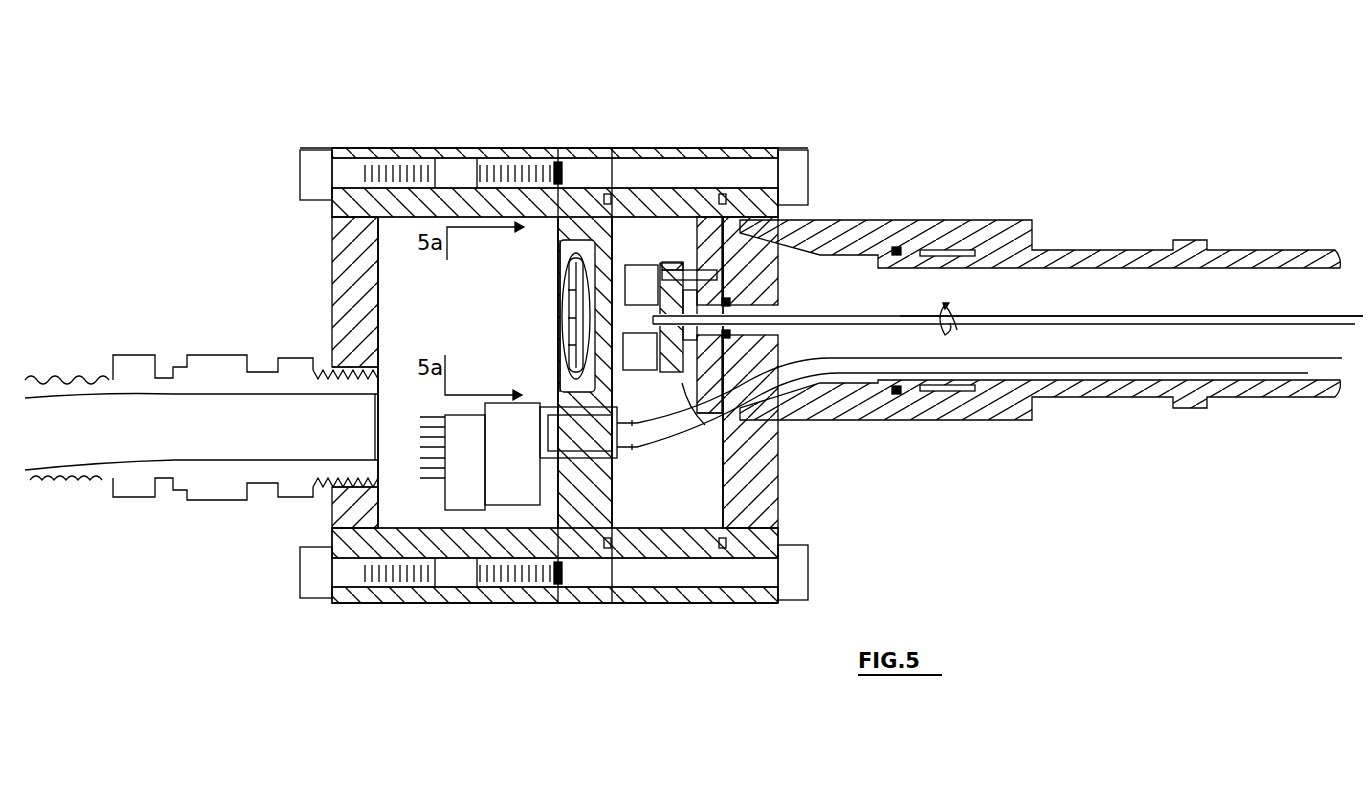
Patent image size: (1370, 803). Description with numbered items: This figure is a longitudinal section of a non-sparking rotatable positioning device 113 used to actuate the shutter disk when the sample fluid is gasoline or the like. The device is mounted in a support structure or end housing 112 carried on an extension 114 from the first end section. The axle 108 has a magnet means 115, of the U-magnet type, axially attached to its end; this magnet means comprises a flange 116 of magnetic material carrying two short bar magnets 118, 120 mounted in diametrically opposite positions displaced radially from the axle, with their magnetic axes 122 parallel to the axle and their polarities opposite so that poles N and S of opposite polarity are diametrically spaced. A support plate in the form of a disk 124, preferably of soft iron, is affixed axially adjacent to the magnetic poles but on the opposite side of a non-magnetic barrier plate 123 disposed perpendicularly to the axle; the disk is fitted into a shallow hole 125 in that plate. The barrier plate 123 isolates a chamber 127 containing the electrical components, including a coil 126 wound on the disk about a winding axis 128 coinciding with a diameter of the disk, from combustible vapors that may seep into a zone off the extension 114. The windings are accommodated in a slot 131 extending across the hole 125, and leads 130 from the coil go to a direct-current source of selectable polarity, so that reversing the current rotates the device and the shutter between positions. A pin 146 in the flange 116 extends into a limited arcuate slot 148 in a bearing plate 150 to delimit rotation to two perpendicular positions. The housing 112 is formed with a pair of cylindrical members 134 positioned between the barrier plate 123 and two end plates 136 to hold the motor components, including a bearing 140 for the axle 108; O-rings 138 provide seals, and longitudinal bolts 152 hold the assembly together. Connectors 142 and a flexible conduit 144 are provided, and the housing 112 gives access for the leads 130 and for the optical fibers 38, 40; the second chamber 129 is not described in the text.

The rotatable positioning device 113 is at (699, 66).
The support structure 112 is at (527, 148).
The non-magnetic barrier plate 123 is at (580, 148).
The end plates 136 is at (365, 148).
The longitudinal bolts 152 is at (810, 180).
The O-rings 138 is at (720, 196).
The chamber 127 is at (437, 307).
The second chamber 129 is at (687, 494).
The slot 131 is at (562, 250).
The disk 124 is at (566, 264).
The winding axis 128 is at (567, 302).
The coil 126 is at (565, 340).
The shallow hole 125 is at (560, 358).
The leads 130 is at (546, 408).
The connectors 142 is at (420, 433).
The flexible conduit 144 is at (68, 378).
The bar magnet 118 is at (626, 268).
The bar magnet 120 is at (640, 373).
The magnetic axes 122 is at (660, 322).
The flange 116 is at (698, 262).
The pin 146 is at (718, 278).
The arcuate slot 148 is at (728, 303).
The bearing 140 is at (727, 332).
The bearing plate 150 is at (760, 313).
The axle 108 is at (1110, 318).
The extension 114 is at (1280, 250).
The optical fiber 40 is at (1110, 373).
The optical fiber 38 is at (1215, 360).
The magnet means 115 is at (682, 383).
The cylindrical members 134 is at (545, 605).